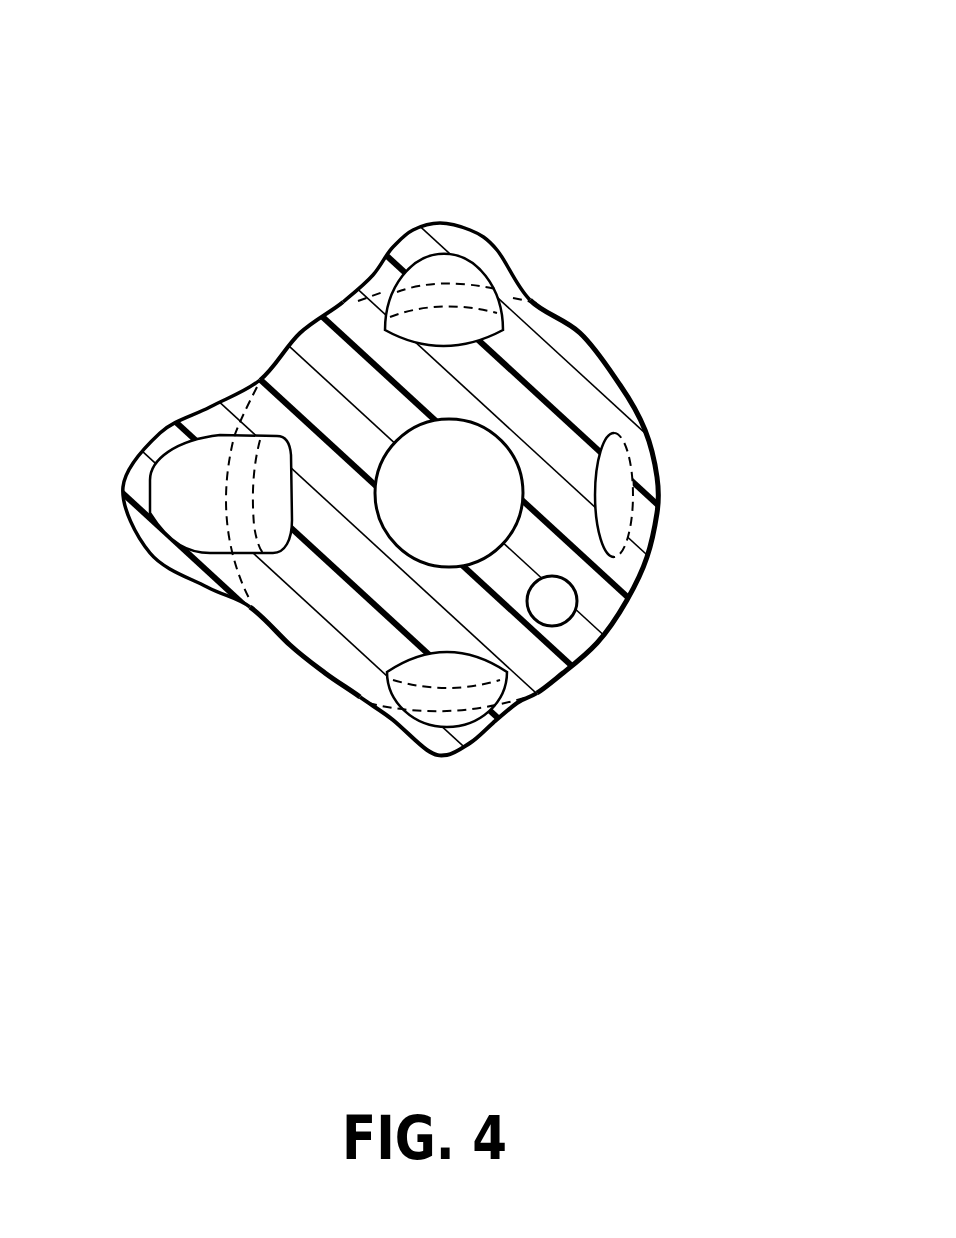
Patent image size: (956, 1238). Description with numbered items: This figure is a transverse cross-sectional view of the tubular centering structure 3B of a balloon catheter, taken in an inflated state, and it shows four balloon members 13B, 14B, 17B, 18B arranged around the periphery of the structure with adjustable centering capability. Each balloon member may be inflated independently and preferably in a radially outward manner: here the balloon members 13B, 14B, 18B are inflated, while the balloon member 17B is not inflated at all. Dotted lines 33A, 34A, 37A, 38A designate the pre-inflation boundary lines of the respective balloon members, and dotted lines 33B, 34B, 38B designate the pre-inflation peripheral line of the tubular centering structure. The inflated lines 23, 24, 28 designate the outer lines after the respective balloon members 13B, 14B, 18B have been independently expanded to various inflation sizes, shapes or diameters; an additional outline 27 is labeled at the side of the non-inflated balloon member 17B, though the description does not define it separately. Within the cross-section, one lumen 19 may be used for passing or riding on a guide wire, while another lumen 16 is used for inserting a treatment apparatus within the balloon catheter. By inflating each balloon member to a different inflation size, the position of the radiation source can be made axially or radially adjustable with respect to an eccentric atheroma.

The tubular centering structure 3B is at (388, 195).
The inflated line 23 is at (447, 210).
The inflated line 24 is at (473, 760).
The right lobe 27 is at (665, 492).
The inflated line 28 is at (120, 467).
The balloon member 13B is at (475, 268).
The dotted line 33A is at (468, 302).
The dotted line 33B is at (372, 277).
The lumen 16 is at (457, 430).
The lumen 19 is at (570, 607).
The balloon member 17B is at (617, 443).
The dotted line 37A is at (637, 443).
The balloon member 18B is at (185, 460).
The dotted line 38A is at (250, 527).
The dotted line 38B is at (220, 527).
The balloon member 14B is at (537, 693).
The dotted line 34A is at (382, 702).
The dotted line 34B is at (433, 722).